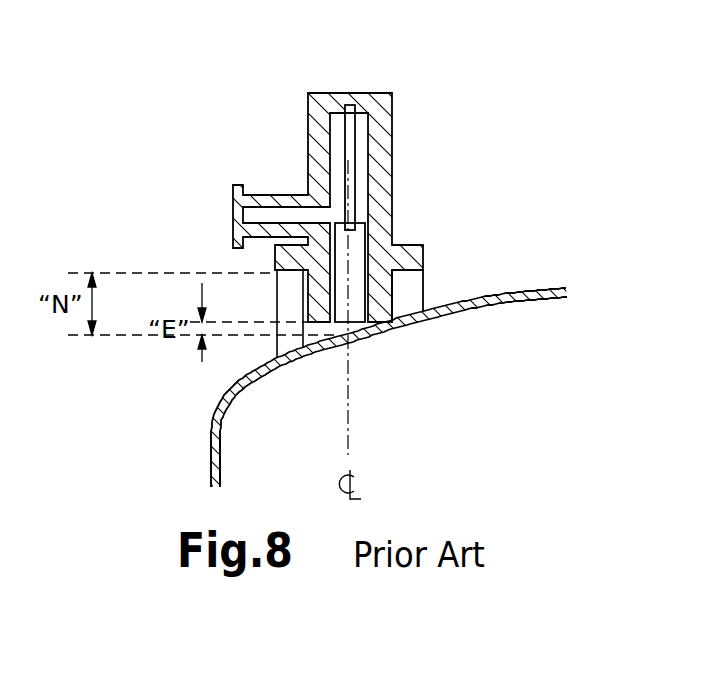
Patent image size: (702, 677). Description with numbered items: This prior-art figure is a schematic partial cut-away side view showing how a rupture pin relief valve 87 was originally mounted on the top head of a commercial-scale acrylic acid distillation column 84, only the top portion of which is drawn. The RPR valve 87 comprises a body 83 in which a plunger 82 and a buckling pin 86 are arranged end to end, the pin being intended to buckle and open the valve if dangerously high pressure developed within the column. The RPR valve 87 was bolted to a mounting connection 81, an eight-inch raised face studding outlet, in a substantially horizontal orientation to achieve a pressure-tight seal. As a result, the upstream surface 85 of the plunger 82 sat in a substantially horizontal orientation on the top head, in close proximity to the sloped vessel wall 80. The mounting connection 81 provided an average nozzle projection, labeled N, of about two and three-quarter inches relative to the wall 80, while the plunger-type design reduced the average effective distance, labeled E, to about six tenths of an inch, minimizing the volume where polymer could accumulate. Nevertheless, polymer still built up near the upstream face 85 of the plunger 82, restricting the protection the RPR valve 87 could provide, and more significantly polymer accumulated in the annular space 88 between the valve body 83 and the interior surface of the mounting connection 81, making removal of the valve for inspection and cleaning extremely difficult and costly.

The vessel wall 80 is at (488, 292).
The mounting connection 81 is at (283, 342).
The plunger 82 is at (355, 257).
The body 83 is at (382, 177).
The distillation column 84 is at (188, 452).
The upstream surface 85 is at (363, 345).
The buckling pin 86 is at (347, 138).
The rupture pin relief valve 87 is at (406, 132).
The annular space 88 is at (397, 317).